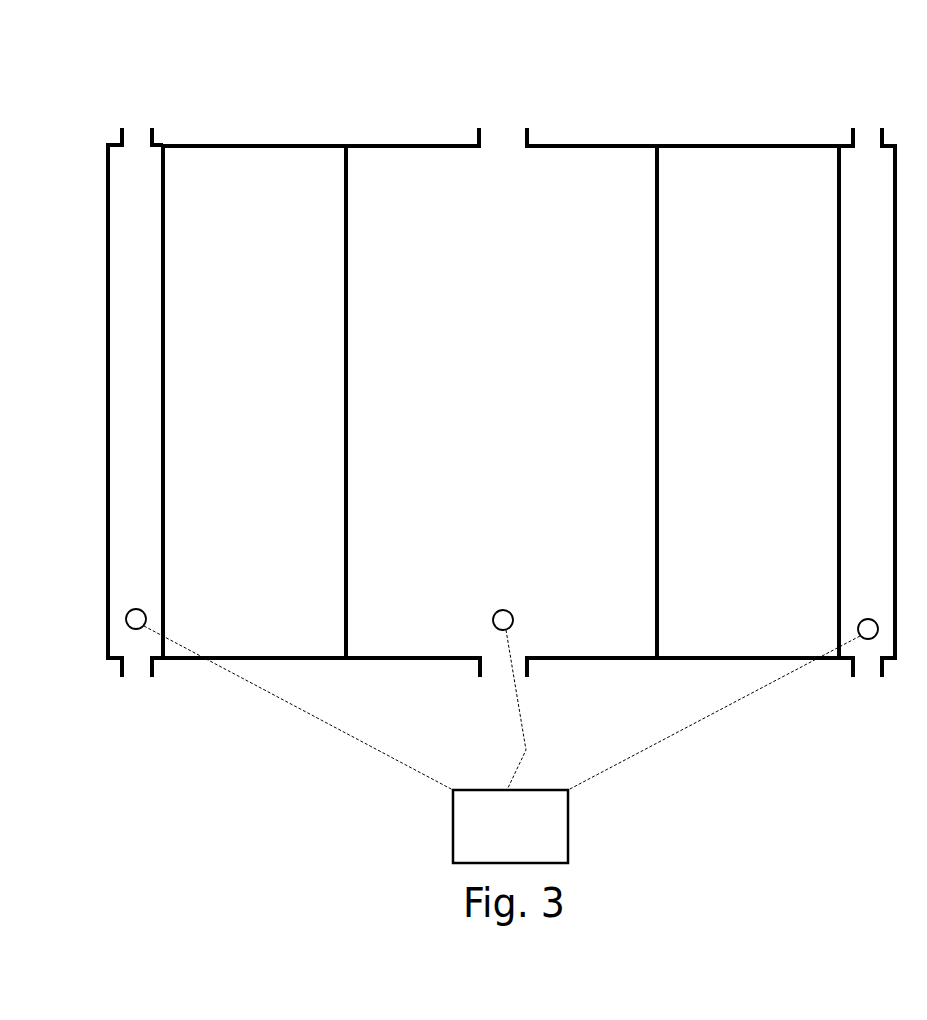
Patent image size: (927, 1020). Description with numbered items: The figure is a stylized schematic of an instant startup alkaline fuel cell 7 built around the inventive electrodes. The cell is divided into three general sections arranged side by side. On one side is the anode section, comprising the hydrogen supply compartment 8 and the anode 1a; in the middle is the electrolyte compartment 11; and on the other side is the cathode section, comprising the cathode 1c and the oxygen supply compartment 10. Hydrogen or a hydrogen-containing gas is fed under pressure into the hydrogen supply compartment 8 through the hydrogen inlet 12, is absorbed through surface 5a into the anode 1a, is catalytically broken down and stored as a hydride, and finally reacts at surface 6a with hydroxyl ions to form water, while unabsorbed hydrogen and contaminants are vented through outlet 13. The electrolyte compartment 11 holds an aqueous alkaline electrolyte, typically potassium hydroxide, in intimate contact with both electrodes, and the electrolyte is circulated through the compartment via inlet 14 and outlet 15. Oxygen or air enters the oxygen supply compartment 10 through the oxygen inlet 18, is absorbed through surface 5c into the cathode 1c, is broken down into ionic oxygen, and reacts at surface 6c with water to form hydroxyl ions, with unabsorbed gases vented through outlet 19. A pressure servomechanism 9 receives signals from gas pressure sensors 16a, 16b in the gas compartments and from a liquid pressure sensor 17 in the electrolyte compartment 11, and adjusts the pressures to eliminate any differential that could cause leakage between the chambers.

The alkaline fuel cell 7 is at (100, 267).
The hydrogen supply compartment 8 is at (125, 401).
The oxygen supply compartment 10 is at (875, 402).
The anode surface 5a is at (168, 166).
The cathode surface 5c is at (835, 167).
The anode electrolyte-side surface 6a is at (352, 167).
The cathode electrolyte-side surface 6c is at (652, 167).
The anode 1a is at (254, 402).
The electrolyte compartment 11 is at (501, 402).
The cathode 1c is at (748, 402).
The hydrogen inlet 12 is at (134, 139).
The electrolyte inlet 14 is at (502, 141).
The oxygen inlet 18 is at (869, 141).
The hydrogen outlet 13 is at (136, 666).
The electrolyte outlet 15 is at (504, 665).
The oxygen outlet 19 is at (868, 666).
The gas pressure sensor 16a is at (284, 685).
The liquid pressure sensor 17 is at (508, 686).
The gas pressure sensor 16b is at (728, 691).
The pressure servomechanism 9 is at (510, 826).